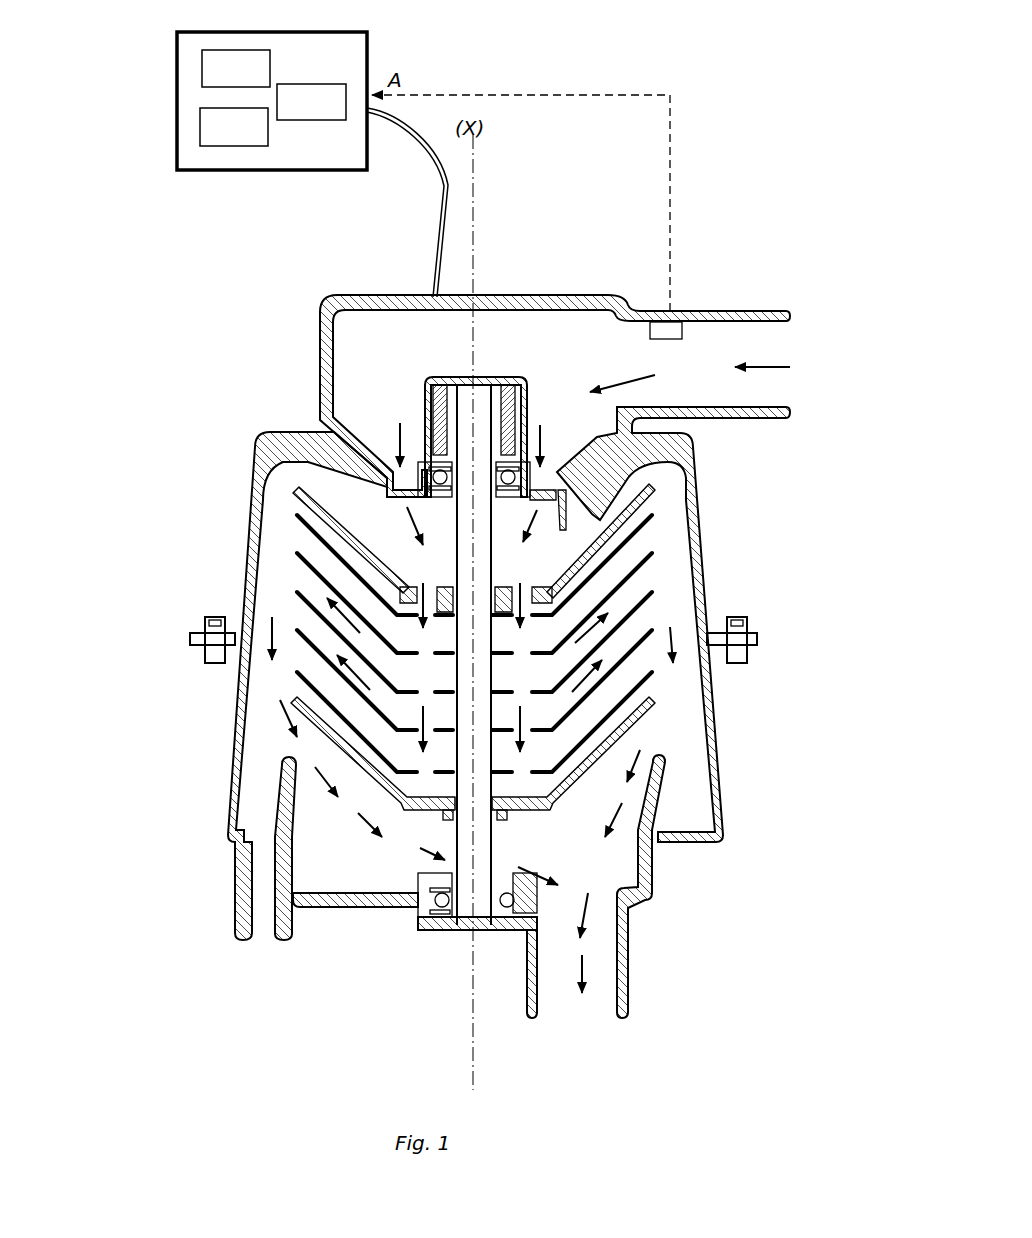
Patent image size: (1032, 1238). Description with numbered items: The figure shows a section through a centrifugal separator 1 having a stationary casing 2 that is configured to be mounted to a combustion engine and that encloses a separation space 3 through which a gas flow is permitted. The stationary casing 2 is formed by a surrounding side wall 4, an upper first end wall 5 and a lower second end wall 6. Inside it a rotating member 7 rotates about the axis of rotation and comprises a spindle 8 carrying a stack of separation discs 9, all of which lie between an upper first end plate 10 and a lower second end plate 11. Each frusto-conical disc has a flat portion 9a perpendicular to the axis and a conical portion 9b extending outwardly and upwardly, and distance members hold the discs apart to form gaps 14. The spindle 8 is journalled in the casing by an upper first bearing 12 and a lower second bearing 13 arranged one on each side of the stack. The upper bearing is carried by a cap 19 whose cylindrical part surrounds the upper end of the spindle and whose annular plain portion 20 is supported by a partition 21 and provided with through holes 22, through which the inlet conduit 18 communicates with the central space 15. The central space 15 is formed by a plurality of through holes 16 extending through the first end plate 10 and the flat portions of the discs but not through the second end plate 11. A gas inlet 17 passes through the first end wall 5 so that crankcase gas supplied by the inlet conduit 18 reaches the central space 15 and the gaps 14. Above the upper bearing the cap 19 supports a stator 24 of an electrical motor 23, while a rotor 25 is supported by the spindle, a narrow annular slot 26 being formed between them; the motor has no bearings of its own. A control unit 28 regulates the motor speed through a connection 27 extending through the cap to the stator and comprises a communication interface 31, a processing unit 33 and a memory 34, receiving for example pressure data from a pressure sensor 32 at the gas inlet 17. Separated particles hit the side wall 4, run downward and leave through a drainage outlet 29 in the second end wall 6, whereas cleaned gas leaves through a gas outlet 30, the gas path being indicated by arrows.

The centrifugal separator 1 is at (222, 327).
The stationary casing 2 is at (257, 446).
The separation space 3 is at (670, 543).
The surrounding side wall 4 is at (293, 718).
The first end wall 5 is at (275, 438).
The second end wall 6 is at (330, 907).
The rotating member 7 is at (655, 688).
The spindle 8 is at (500, 857).
The stack of separation discs 9 is at (640, 615).
The flat portion 9a is at (407, 773).
The conical portion 9b is at (313, 578).
The first end plate 10 is at (600, 525).
The second end plate 11 is at (640, 727).
The first bearing 12 is at (300, 490).
The second bearing 13 is at (543, 907).
The gaps 14 is at (310, 542).
The central space 15 is at (417, 717).
The through holes 16 is at (423, 773).
The gas inlet 17 is at (555, 450).
The inlet conduit 18 is at (742, 311).
The cap 19 is at (482, 372).
The annular plain portion 20 is at (391, 322).
The partition 21 is at (317, 417).
The through holes 22 is at (570, 483).
The electrical motor 23 is at (540, 380).
The stator 24 is at (540, 377).
The rotor 25 is at (504, 385).
The narrow annular slot 26 is at (514, 388).
The connection 27 is at (422, 145).
The control unit 28 is at (367, 57).
The drainage outlet 29 is at (258, 913).
The gas outlet 30 is at (608, 983).
The communication interface 31 is at (236, 68).
The pressure sensor 32 is at (683, 320).
The processing unit 33 is at (234, 127).
The memory 34 is at (311, 102).